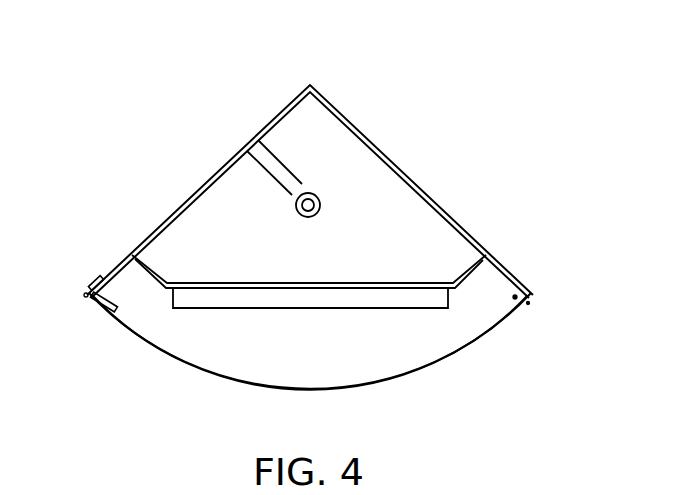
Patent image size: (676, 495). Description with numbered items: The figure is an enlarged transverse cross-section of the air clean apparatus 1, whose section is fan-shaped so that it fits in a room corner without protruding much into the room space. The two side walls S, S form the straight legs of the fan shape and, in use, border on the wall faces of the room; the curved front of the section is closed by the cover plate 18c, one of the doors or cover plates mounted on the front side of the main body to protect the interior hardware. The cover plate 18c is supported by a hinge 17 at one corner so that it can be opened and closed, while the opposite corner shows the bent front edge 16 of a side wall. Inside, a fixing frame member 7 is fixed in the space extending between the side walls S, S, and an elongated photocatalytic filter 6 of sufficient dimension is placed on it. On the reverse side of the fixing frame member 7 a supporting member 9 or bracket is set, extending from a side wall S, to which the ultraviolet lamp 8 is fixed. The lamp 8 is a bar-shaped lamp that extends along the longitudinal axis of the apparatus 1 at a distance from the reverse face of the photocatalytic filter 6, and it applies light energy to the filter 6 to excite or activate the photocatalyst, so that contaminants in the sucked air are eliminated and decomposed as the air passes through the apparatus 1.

The air clean apparatus 1 is at (392, 101).
The side wall S is at (193, 195).
The photocatalytic filter 6 is at (283, 300).
The fixing frame member 7 is at (390, 283).
The ultraviolet lamp 8 is at (321, 204).
The supporting member 9 is at (282, 166).
The bent front edge of a side wall 16 is at (513, 297).
The hinge 17 is at (84, 295).
The cover plate 18c is at (363, 387).